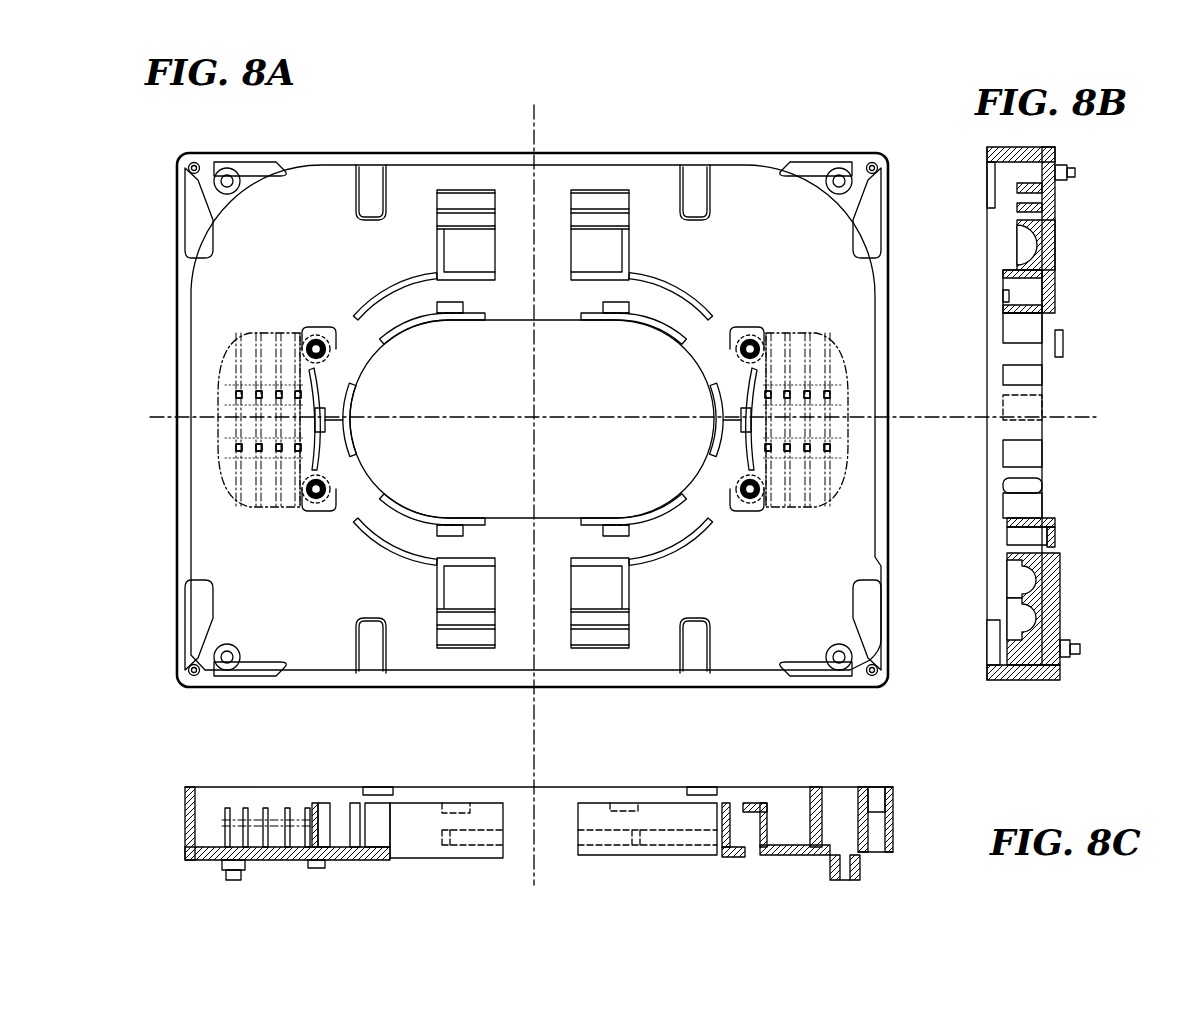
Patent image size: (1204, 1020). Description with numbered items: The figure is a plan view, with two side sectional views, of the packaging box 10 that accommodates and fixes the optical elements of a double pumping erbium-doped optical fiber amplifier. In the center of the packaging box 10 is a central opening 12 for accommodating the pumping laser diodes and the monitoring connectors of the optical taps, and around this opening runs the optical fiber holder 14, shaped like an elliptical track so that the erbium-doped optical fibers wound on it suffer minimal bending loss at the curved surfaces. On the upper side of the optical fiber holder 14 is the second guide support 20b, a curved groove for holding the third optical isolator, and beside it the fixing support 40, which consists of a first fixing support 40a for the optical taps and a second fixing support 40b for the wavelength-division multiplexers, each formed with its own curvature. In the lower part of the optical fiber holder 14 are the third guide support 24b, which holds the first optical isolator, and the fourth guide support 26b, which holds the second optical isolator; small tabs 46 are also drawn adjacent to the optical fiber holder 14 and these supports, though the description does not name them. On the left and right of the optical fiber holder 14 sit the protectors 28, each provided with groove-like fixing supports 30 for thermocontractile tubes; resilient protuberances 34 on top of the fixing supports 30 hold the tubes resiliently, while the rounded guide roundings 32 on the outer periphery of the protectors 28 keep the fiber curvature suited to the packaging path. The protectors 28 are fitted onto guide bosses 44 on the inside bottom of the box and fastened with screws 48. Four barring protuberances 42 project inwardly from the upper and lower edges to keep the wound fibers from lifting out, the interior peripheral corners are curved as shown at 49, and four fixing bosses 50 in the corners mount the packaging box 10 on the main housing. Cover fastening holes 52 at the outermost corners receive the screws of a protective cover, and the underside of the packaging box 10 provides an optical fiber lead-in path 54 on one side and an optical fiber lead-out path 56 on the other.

In FIG. 8A, the packaging box 10 is at (74, 176).
In FIG. 8A, the central opening 12 is at (618, 394).
In FIG. 8A, the optical fiber holder 14 is at (362, 530).
In FIG. 8C, the optical fiber holder 14 is at (735, 858).
In FIG. 8A, the second guide support 20b is at (497, 250).
In FIG. 8B, the second guide support 20b is at (1054, 258).
In FIG. 8A, the third guide support 24b is at (490, 576).
In FIG. 8B, the third guide support 24b is at (1040, 592).
In FIG. 8A, the fourth guide support 26b is at (624, 622).
In FIG. 8B, the fourth guide support 26b is at (1040, 624).
In FIG. 8A, the protector 28 is at (212, 375).
In FIG. 8C, the protector 28 is at (230, 808).
In FIG. 8A, the fixing support 30 is at (280, 507).
In FIG. 8A, the guide rounding 32 is at (233, 343).
In FIG. 8A, the resilient protuberance 34 is at (240, 448).
In FIG. 8A, the fixing support 40 is at (446, 196).
In FIG. 8A, the first fixing support 40a is at (480, 193).
In FIG. 8B, the first fixing support 40a is at (1052, 222).
In FIG. 8A, the second fixing support 40b is at (497, 212).
In FIG. 8B, the second fixing support 40b is at (1050, 240).
In FIG. 8A, the barring protuberance 42 is at (705, 192).
In FIG. 8A, the guide boss 44 is at (316, 338).
In FIG. 8B, the guide boss 44 is at (1050, 486).
In FIG. 8C, the guide boss 44 is at (316, 803).
In FIG. 8A, the retaining tab 46 is at (437, 307).
In FIG. 8C, the retaining tab 46 is at (748, 803).
In FIG. 8A, the screw 48 is at (750, 336).
In FIG. 8A, the curved interior peripheral corner 49 is at (186, 205).
In FIG. 8A, the fixing boss 50 is at (231, 170).
In FIG. 8B, the fixing boss 50 is at (1082, 650).
In FIG. 8C, the fixing boss 50 is at (238, 880).
In FIG. 8A, the cover fastening hole 52 is at (872, 162).
In FIG. 8C, the cover fastening hole 52 is at (872, 787).
In FIG. 8A, the optical fiber lead-in path 54 is at (838, 670).
In FIG. 8A, the optical fiber lead-out path 56 is at (231, 672).